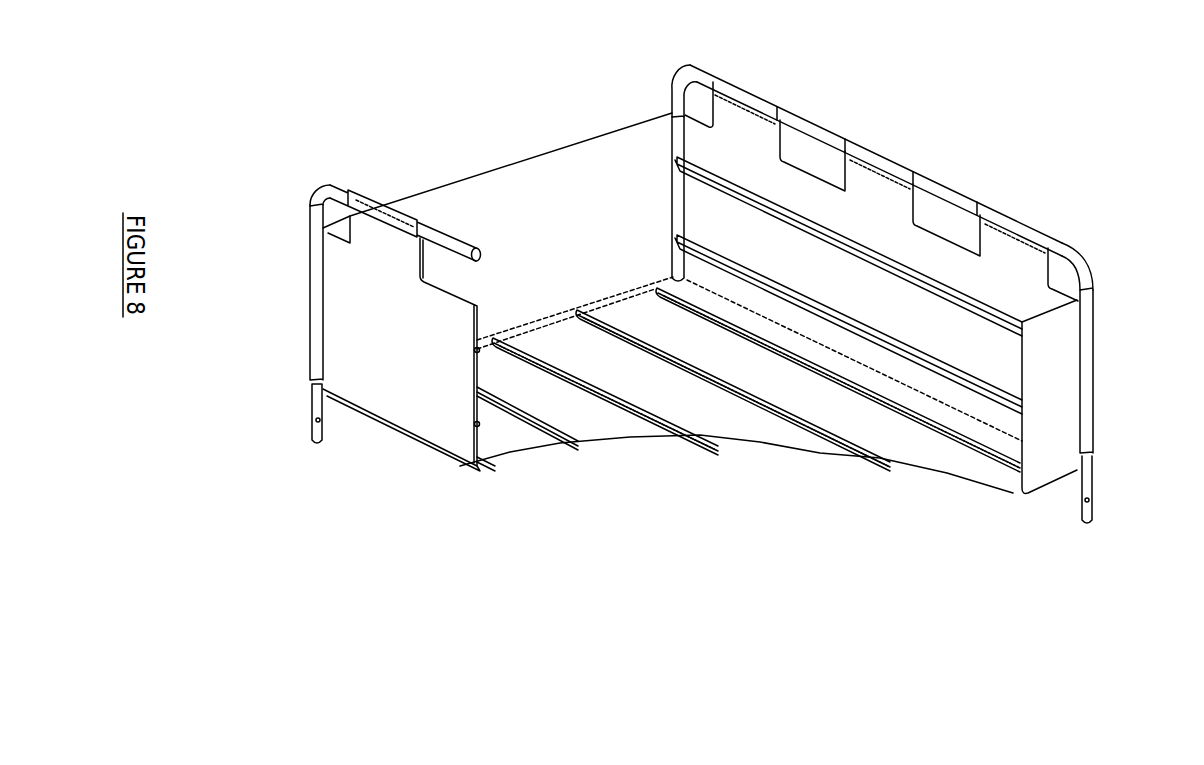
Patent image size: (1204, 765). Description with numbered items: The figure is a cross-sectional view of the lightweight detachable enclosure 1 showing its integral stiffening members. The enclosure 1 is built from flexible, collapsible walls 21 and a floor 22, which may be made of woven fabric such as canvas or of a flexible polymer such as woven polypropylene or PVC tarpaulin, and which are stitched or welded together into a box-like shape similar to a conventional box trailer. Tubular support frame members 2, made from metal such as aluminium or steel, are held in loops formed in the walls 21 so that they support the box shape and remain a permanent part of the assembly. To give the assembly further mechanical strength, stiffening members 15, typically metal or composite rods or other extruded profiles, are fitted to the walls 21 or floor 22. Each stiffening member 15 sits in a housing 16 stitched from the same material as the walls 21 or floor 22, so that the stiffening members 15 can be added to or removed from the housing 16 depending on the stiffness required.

The lightweight detachable enclosure 1 is at (506, 125).
The support frame members 2 is at (683, 63).
The walls 21 is at (480, 212).
The stiffening members 15 is at (700, 436).
The housing 16 is at (667, 432).
The floor 22 is at (940, 457).